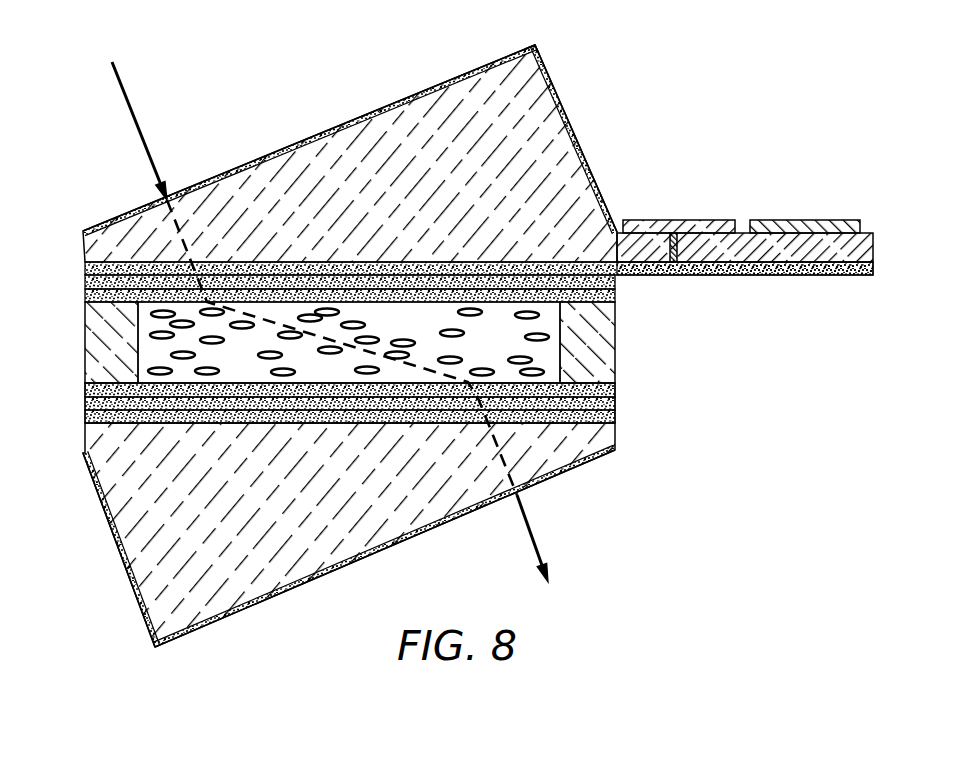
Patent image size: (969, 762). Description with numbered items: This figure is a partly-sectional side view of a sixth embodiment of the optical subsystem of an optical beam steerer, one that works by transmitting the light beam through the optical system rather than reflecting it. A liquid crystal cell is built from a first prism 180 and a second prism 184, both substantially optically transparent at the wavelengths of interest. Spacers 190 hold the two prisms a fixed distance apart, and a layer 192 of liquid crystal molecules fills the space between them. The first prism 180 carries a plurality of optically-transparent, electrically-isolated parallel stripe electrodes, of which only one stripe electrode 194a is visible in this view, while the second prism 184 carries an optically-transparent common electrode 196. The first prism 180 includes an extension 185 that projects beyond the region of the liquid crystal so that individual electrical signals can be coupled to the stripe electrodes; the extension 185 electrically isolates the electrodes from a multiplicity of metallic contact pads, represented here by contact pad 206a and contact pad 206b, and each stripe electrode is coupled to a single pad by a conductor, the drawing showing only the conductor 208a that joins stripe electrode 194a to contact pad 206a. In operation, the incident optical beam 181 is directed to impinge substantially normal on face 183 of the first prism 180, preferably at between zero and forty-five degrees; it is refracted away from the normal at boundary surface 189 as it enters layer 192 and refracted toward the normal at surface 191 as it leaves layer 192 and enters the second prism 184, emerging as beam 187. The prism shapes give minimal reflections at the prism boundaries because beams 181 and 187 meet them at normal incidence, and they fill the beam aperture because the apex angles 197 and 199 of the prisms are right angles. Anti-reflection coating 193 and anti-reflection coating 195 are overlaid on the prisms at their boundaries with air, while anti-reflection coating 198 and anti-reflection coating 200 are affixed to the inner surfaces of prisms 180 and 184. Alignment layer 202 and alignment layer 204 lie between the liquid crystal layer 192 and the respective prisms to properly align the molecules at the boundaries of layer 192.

The first prism 180 is at (557, 97).
The incident optical beam 181 is at (134, 113).
The face of prism 180 183 is at (287, 148).
The second prism 184 is at (573, 460).
The extension 185 is at (874, 247).
The exiting beam 187 is at (528, 521).
The boundary surface 189 is at (275, 262).
The spacers 190 is at (98, 347).
The surface 191 is at (403, 402).
The layer of liquid crystal molecules 192 is at (516, 345).
The anti-reflection coating 193 is at (576, 140).
The stripe electrode 194a is at (745, 274).
The anti-reflection coating 195 is at (381, 551).
The common electrode 196 is at (612, 418).
The apex angle of prism 180 197 is at (537, 46).
The anti-reflection coating 198 is at (392, 262).
The apex angle of prism 184 199 is at (155, 648).
The anti-reflection coating 200 is at (241, 384).
The alignment layer 202 is at (405, 294).
The alignment layer 204 is at (318, 388).
The contact pad 206a is at (650, 220).
The contact pad 206b is at (773, 220).
The conductor 208a is at (698, 222).